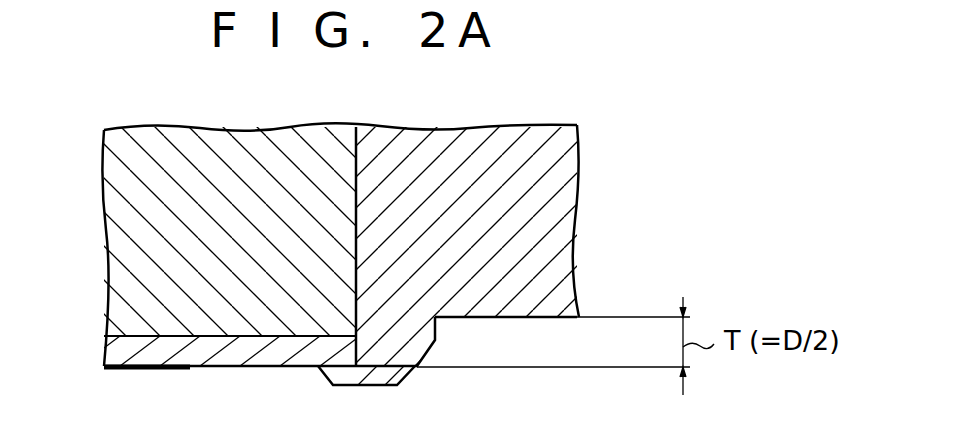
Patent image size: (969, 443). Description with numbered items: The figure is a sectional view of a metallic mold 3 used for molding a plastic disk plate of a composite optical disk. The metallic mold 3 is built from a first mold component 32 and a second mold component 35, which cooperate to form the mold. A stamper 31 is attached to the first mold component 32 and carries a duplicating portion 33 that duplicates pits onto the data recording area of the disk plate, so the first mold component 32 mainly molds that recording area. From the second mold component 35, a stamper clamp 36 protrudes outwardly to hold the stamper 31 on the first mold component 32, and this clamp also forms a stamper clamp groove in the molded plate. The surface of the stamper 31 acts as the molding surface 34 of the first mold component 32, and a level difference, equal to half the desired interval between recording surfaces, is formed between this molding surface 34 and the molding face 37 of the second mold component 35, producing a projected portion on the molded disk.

The metallic mold 3 is at (102, 150).
The stamper 31 is at (124, 347).
The first mold component 32 is at (128, 224).
The duplicating portion 33 is at (150, 370).
The molding surface 34 is at (262, 369).
The second mold component 35 is at (581, 245).
The stamper clamp 36 is at (386, 387).
The molding face 37 is at (525, 319).